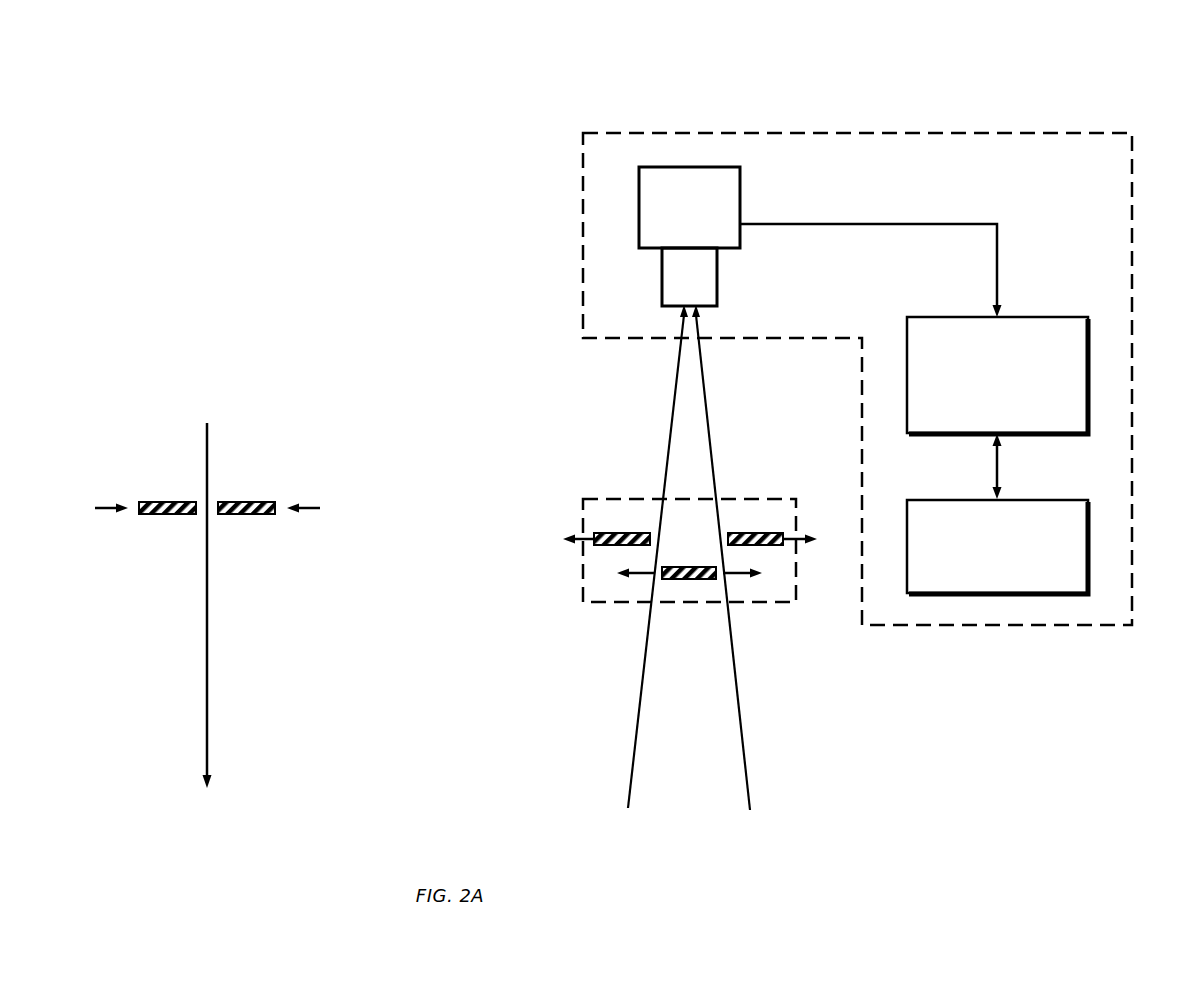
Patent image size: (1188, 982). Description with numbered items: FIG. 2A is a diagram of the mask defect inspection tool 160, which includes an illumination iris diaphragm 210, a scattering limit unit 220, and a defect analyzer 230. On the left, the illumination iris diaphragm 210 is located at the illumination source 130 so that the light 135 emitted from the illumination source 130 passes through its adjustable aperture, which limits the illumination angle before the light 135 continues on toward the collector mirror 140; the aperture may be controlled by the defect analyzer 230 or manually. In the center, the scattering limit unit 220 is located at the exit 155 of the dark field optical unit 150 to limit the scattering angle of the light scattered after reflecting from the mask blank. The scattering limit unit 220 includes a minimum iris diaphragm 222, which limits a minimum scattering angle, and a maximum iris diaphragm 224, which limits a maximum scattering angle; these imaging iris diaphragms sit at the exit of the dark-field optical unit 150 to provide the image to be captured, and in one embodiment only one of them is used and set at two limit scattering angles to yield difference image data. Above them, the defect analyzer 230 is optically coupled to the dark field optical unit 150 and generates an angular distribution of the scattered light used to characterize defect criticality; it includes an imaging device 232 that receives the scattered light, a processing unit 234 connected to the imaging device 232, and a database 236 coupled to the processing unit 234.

The illumination source 130 is at (207, 369).
The light 135 is at (207, 645).
The collector mirror 140 is at (207, 843).
The dark field optical unit 150 is at (686, 605).
The exit of the dark field optical unit 155 is at (689, 557).
The mask defect inspection tool 160 is at (1082, 105).
The illumination iris diaphragm 210 is at (262, 516).
The scattering limit unit 220 is at (604, 504).
The minimum iris diaphragm 222 is at (679, 593).
The maximum iris diaphragm 224 is at (602, 522).
The defect analyzer 230 is at (597, 316).
The imaging device 232 is at (730, 200).
The processing unit 234 is at (1072, 323).
The database 236 is at (1072, 506).